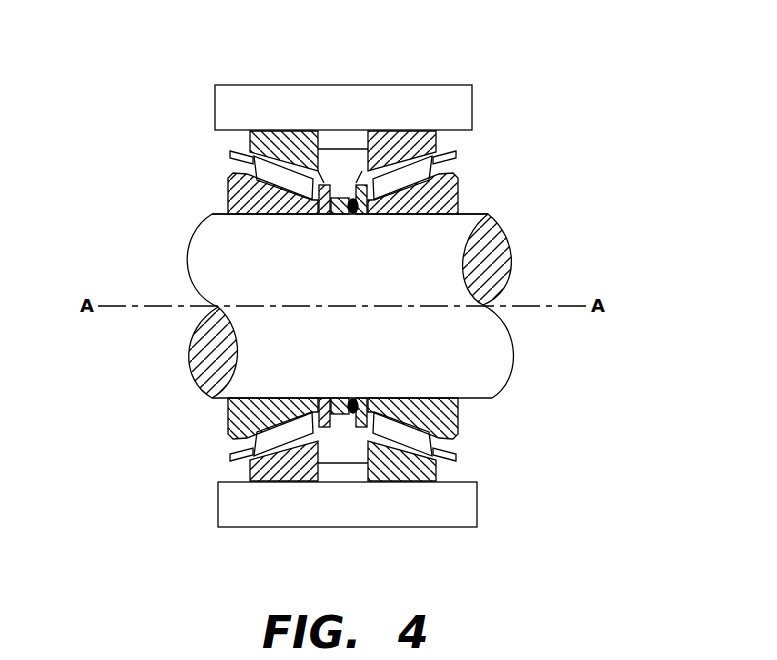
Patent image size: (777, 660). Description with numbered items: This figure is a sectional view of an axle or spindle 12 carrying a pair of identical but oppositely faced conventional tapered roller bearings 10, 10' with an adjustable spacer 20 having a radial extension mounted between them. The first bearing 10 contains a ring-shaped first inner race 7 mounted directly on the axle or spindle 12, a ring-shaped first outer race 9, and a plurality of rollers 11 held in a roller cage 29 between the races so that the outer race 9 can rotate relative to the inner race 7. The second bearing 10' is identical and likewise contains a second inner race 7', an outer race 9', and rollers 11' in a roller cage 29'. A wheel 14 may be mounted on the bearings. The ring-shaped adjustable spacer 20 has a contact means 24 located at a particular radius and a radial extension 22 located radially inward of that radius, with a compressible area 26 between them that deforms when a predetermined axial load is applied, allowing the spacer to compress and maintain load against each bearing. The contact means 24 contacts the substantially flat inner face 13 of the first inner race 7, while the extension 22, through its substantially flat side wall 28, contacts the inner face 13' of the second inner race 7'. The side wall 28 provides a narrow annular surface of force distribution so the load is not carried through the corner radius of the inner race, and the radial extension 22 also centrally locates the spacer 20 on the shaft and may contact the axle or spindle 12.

The first inner race 7 is at (475, 305).
The second inner race 7' is at (212, 305).
The first outer race 9 is at (473, 267).
The outer race 9' is at (215, 267).
The first bearing 10 is at (528, 219).
The second bearing 10' is at (159, 216).
The rollers 11 is at (484, 294).
The rollers 11' is at (204, 294).
The axle or spindle 12 is at (487, 278).
The inner face 13 is at (396, 306).
The inner face 13' is at (281, 306).
The wheel 14 is at (452, 509).
The adjustable spacer 20 is at (343, 436).
The radial extension 22 is at (338, 212).
The contact means 24 is at (353, 212).
The compressible area 26 is at (352, 199).
The side wall 28 is at (341, 199).
The roller cage 29 is at (514, 276).
The roller cage 29' is at (174, 276).